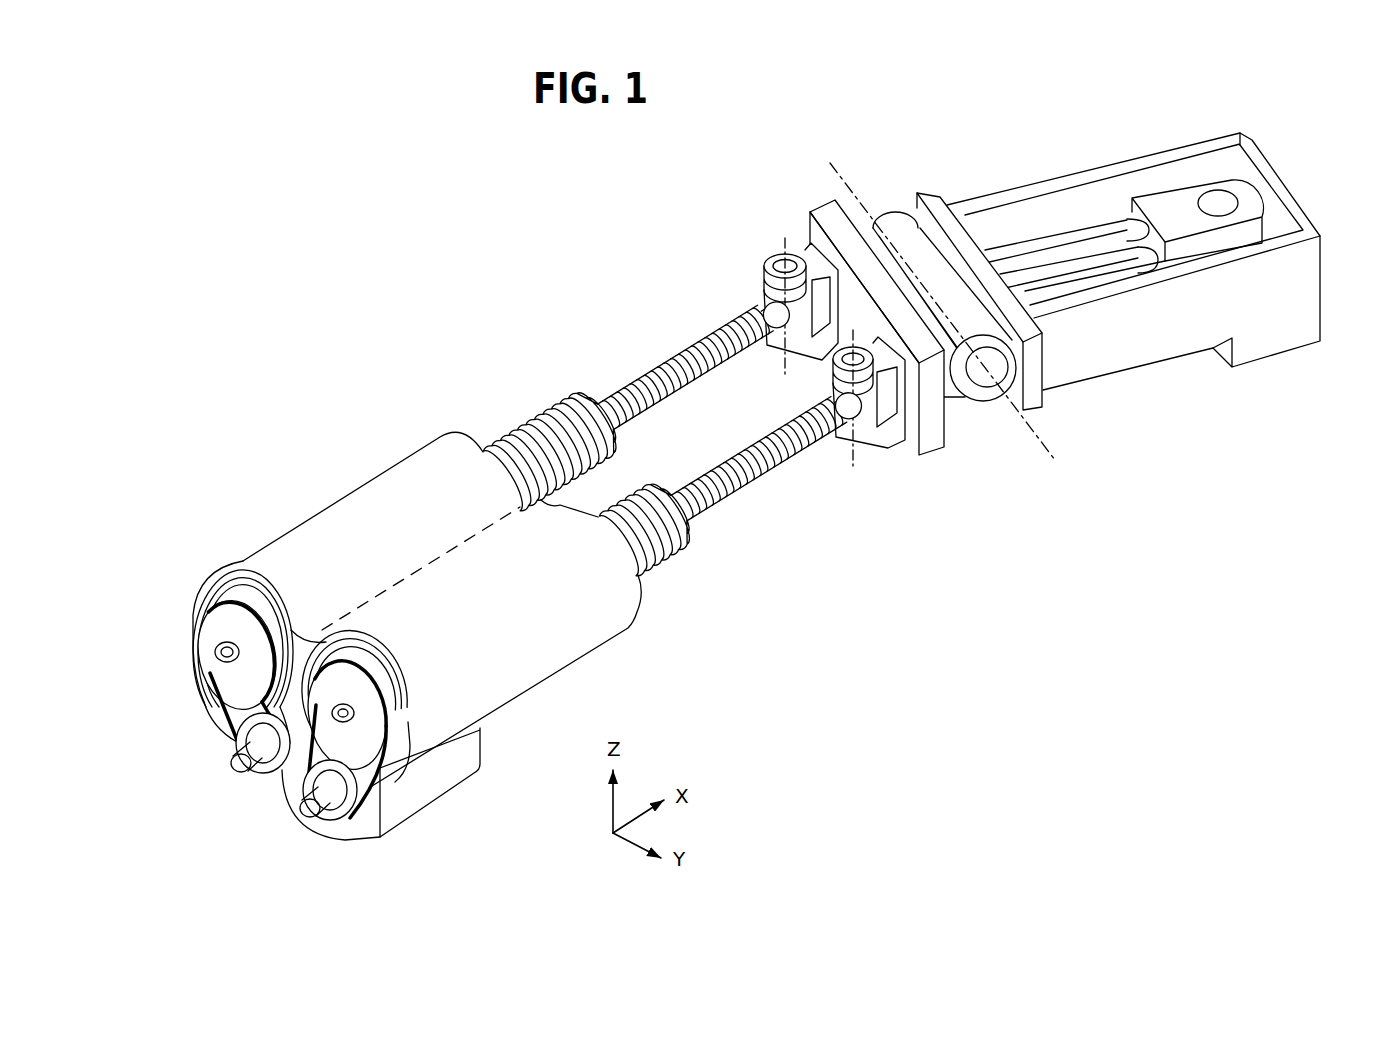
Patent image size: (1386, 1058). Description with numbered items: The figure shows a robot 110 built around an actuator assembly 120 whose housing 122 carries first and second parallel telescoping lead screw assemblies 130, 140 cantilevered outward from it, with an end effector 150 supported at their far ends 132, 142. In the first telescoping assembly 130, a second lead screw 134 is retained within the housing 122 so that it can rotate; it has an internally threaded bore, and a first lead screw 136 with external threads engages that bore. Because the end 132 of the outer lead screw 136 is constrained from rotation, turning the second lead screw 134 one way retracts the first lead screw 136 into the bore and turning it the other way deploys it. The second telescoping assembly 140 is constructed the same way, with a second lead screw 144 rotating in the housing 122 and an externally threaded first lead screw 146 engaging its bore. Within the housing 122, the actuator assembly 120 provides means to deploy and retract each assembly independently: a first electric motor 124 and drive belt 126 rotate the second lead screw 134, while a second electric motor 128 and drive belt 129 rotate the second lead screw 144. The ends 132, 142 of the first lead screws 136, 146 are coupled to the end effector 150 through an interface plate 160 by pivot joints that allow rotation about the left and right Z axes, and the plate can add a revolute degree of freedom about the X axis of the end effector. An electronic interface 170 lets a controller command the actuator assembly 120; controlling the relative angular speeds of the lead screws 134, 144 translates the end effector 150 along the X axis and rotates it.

The robot 110 is at (452, 240).
The actuator assembly 120 is at (330, 500).
The housing 122 is at (583, 653).
The first electric motor 124 is at (257, 773).
The drive belt 126 is at (228, 706).
The second electric motor 128 is at (330, 807).
The drive belt 129 is at (380, 777).
The first telescoping lead screw assembly 130 is at (633, 377).
The end of first lead screw 132 is at (768, 300).
The second lead screw 134 is at (533, 420).
The first lead screw 136 is at (700, 343).
The second telescoping lead screw assembly 140 is at (728, 506).
The end of first lead screw 142 is at (867, 427).
The second lead screw 144 is at (663, 557).
The first lead screw 146 is at (750, 458).
The end effector 150 is at (1198, 145).
The interface plate 160 is at (812, 205).
The electronic interface 170 is at (413, 827).